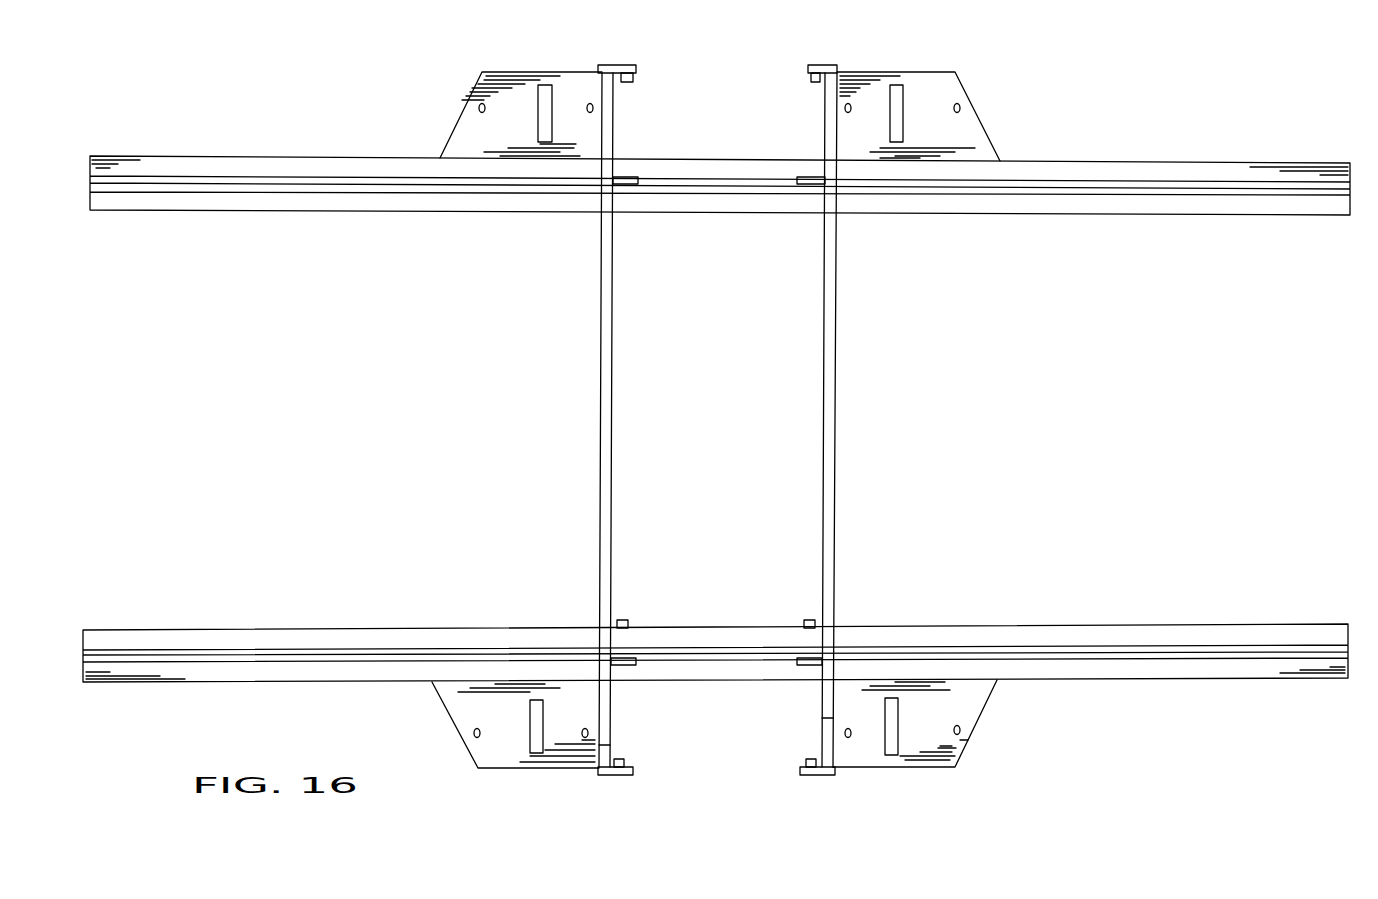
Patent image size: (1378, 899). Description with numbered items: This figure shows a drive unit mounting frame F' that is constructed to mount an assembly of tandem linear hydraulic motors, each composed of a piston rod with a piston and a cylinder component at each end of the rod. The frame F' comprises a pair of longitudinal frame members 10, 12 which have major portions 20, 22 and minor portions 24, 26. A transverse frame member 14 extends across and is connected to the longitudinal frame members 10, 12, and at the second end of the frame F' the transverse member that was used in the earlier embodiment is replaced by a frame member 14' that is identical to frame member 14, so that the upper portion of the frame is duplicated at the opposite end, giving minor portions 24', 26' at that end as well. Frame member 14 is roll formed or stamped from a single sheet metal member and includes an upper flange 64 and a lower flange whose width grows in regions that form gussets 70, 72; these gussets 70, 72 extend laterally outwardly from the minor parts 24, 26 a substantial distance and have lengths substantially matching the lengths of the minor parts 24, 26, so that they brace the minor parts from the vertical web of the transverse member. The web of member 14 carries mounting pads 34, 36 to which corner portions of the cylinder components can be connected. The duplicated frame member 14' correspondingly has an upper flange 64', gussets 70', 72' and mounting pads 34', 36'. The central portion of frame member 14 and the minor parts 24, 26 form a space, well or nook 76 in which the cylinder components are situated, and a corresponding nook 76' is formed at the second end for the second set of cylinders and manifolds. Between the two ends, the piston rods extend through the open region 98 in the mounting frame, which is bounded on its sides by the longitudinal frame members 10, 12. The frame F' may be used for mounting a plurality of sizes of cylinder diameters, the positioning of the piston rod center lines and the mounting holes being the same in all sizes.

The longitudinal frame member 10 is at (836, 420).
The longitudinal frame member 12 is at (584, 420).
The transverse frame member 14 is at (507, 89).
The transverse frame member 14' is at (501, 758).
The major portion 20 is at (834, 420).
The major portion 22 is at (596, 420).
The minor portion 24 is at (798, 420).
The minor portion 24' is at (622, 789).
The minor portion 26 is at (634, 420).
The minor portion 26' is at (796, 731).
The mounting pad 34 is at (787, 162).
The mounting pad 34' is at (638, 668).
The mounting pad 36 is at (657, 163).
The mounting pad 36' is at (789, 668).
The upper flange 64 is at (720, 215).
The upper flange 64' is at (715, 633).
The gusset 70 is at (932, 116).
The gusset 70' is at (526, 759).
The gusset 72 is at (527, 88).
The gusset 72' is at (915, 750).
The nook 76 is at (726, 64).
The nook 76' is at (707, 779).
The open region 98 is at (786, 362).
The drive unit mounting frame F' is at (986, 541).